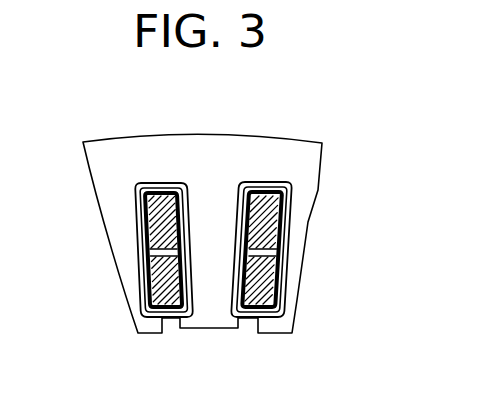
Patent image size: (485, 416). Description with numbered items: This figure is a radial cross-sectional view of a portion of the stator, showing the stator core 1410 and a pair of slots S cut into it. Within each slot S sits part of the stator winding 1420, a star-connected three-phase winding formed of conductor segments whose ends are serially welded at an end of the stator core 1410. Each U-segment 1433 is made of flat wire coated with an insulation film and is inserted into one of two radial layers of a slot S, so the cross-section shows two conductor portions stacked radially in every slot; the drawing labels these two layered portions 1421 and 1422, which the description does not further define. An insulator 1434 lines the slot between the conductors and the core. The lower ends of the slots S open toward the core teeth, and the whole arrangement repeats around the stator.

The stator core 1410 is at (210, 160).
The slot S is at (154, 181).
The stator winding 1420 is at (288, 283).
The first coil 1421 is at (148, 222).
The second coil 1422 is at (167, 287).
The U-segment 1433 is at (273, 207).
The insulator 1434 is at (285, 232).